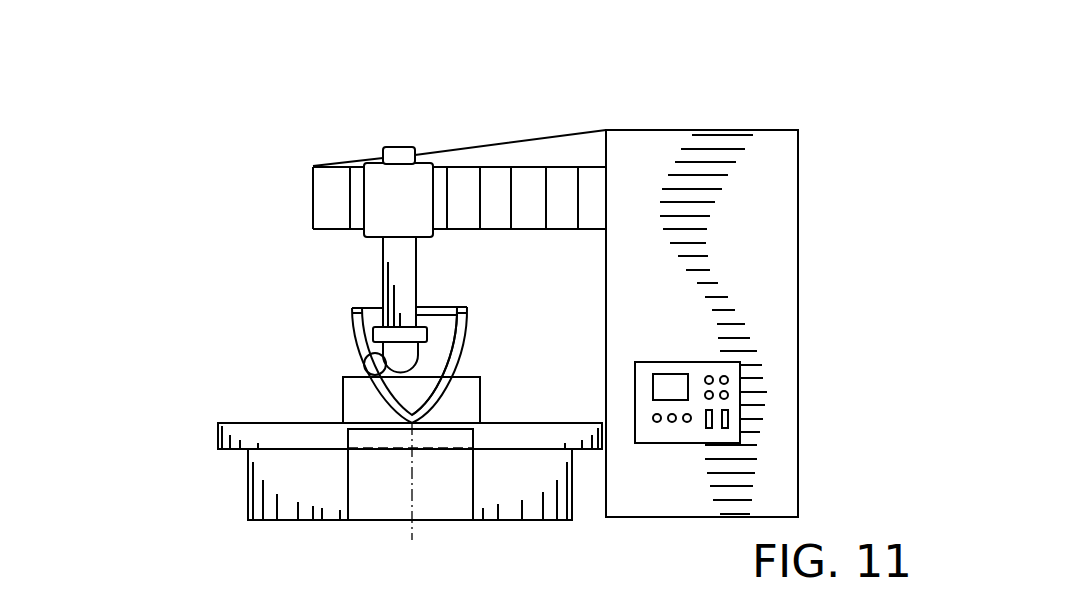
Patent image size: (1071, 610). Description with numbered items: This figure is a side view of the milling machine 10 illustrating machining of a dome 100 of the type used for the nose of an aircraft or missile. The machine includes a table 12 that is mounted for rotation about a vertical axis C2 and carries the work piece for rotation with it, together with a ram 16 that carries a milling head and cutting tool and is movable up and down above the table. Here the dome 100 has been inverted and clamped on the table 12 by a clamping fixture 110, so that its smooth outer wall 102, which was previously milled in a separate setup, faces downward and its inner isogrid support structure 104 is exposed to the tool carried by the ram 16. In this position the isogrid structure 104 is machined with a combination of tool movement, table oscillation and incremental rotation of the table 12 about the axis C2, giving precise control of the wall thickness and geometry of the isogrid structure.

The milling machine 10 is at (228, 110).
The table 12 is at (218, 433).
The ram 16 is at (383, 277).
The dome 100 is at (350, 320).
The outer wall 102 is at (463, 340).
The isogrid support structure 104 is at (440, 316).
The clamping fixture 110 is at (483, 412).
The vertical axis C2 is at (410, 487).